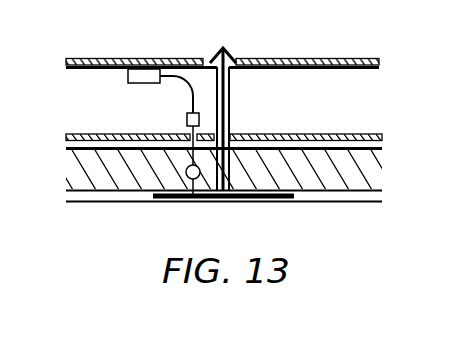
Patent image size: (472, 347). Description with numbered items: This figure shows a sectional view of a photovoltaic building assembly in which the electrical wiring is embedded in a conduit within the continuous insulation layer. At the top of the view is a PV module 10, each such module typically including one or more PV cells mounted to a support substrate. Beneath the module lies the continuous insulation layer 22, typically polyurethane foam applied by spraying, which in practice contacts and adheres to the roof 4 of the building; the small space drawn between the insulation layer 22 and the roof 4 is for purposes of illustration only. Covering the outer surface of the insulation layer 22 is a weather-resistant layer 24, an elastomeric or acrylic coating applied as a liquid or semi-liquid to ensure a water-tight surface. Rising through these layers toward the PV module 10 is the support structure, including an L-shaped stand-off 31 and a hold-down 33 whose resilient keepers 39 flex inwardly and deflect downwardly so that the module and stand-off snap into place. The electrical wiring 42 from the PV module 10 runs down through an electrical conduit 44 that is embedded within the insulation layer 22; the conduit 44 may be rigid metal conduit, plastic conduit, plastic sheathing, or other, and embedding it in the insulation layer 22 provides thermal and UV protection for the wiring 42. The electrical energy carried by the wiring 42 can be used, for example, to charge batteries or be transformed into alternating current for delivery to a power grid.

The roof 4 is at (323, 203).
The PV module 10 is at (125, 58).
The continuous insulation layer 22 is at (362, 178).
The weather-resistant layer 24 is at (322, 134).
The stand-off 31 is at (231, 117).
The hold-down 33 is at (238, 88).
The resilient keepers 39 is at (229, 52).
The electrical wiring 42 is at (182, 88).
The electrical conduit 44 is at (191, 199).